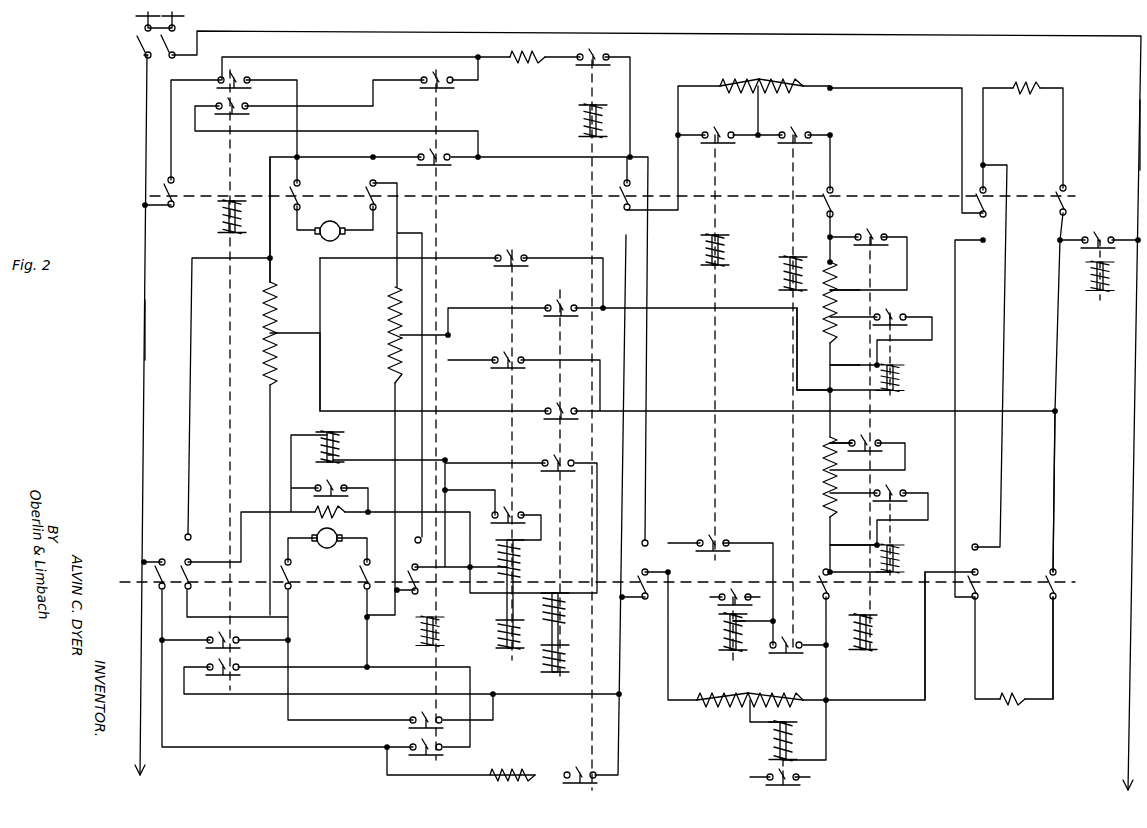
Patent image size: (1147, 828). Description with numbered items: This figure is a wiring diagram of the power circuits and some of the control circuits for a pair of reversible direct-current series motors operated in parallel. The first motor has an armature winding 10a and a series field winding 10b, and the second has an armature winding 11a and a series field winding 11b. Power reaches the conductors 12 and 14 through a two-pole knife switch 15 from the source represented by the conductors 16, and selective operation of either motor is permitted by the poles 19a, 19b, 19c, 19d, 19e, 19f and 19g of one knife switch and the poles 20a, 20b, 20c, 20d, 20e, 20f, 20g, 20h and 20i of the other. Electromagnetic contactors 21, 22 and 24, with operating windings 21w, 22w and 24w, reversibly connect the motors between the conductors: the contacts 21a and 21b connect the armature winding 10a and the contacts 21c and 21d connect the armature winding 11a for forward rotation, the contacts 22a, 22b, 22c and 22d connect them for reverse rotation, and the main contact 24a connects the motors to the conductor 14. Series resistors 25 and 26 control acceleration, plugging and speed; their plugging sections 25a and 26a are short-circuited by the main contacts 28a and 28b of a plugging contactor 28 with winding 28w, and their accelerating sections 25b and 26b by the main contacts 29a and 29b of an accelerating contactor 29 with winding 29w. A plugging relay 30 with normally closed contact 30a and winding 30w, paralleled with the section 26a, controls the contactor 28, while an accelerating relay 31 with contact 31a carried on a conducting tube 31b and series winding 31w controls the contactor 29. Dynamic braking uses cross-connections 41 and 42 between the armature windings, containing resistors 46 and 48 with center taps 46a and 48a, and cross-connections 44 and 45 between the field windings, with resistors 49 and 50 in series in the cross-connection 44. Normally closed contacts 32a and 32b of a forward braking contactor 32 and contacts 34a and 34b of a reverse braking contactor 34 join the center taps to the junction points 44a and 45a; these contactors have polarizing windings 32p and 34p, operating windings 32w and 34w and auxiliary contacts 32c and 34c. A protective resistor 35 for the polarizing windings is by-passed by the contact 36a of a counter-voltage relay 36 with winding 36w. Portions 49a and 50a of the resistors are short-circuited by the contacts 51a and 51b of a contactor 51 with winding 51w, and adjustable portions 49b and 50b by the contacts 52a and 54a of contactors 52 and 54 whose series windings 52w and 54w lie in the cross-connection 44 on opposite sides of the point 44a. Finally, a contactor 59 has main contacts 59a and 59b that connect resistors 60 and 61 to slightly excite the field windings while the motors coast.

The armature winding 10a is at (340, 238).
The series field winding 10b is at (1038, 76).
The armature winding 11a is at (327, 548).
The series field winding 11b is at (1010, 708).
The conductor 12 is at (144, 328).
The conductor 14 is at (1140, 134).
The two-pole knife switch 15 is at (138, 46).
The conductors 16 is at (140, 17).
The pole 19a is at (160, 188).
The pole 19b is at (311, 192).
The pole 19c is at (372, 188).
The double-throw pole 19d is at (625, 190).
The pole 19e is at (822, 192).
The double-throw pole 19f is at (978, 190).
The pole 19g is at (1068, 196).
The pole 20a is at (160, 575).
The pole 20b is at (292, 592).
The pole 20c is at (365, 582).
The double-throw pole 20d is at (648, 593).
The pole 20e is at (823, 572).
The double-throw pole 20f is at (988, 571).
The pole 20g is at (1067, 583).
The double-throw pole 20h is at (195, 572).
The double-throw pole 20i is at (412, 570).
The electromagnetic contactor 21 is at (232, 165).
The main contact 21a is at (232, 86).
The main contact 21b is at (236, 112).
The main contact 21c is at (215, 632).
The main contact 21d is at (235, 668).
The operating winding 21w is at (230, 212).
The electromagnetic contactor 22 is at (438, 113).
The main contact 22a is at (434, 73).
The main contact 22b is at (431, 165).
The main contact 22c is at (414, 715).
The main contact 22d is at (414, 745).
The operating winding 22w is at (425, 626).
The electromagnetic contactor 24 is at (1097, 275).
The main contact 24a is at (1098, 231).
The operating winding 24w is at (1090, 275).
The series resistor 25 is at (761, 64).
The plugging section 25a is at (784, 82).
The accelerating section 25b is at (733, 82).
The series resistor 26 is at (740, 709).
The plugging section 26a is at (781, 692).
The accelerating section 26b is at (726, 692).
The electromagnetic plugging contactor 28 is at (793, 224).
The main contact 28a is at (795, 125).
The main contact 28b is at (785, 640).
The operating winding 28w is at (788, 264).
The electromagnetic accelerating contactor 29 is at (715, 340).
The main contact 29a is at (716, 125).
The main contact 29b is at (713, 537).
The operating winding 29w is at (710, 240).
The plugging relay 30 is at (796, 740).
The normally closed contact 30a is at (780, 786).
The operating winding 30w is at (795, 738).
The accelerating relay 31 is at (733, 601).
The normally closed contact 31a is at (735, 592).
The conducting tube 31b is at (727, 620).
The series-type operating winding 31w is at (725, 636).
The electromagnetic forward braking contactor 32 is at (510, 435).
The main contact 32a is at (502, 268).
The main contact 32b is at (496, 368).
The auxiliary contact 32c is at (508, 512).
The polarizing winding 32p is at (514, 552).
The operating winding 32w is at (498, 626).
The electromagnetic reverse braking contactor 34 is at (560, 381).
The main contact 34a is at (553, 315).
The main contact 34b is at (553, 419).
The auxiliary contact 34c is at (552, 455).
The polarizing winding 34p is at (551, 607).
The operating winding 34w is at (548, 652).
The protective resistor 35 is at (315, 518).
The counter-voltage relay 36 is at (340, 422).
The normally closed contact 36a is at (340, 480).
The operating winding 36w is at (334, 448).
The cross-connection 41 is at (270, 238).
The cross-connection 42 is at (395, 266).
The cross-connection 44 is at (826, 676).
The junction point 44a is at (830, 390).
The cross-connection 45 is at (1053, 672).
The junction point 45a is at (1073, 491).
The resistor 46 is at (281, 302).
The center tap 46a is at (270, 338).
The resistor 48 is at (393, 294).
The center tap 48a is at (393, 333).
The resistor 49 is at (820, 307).
The resistor portion 49a is at (832, 290).
The adjustable resistor portion 49b is at (832, 342).
The resistor 50 is at (828, 484).
The resistor portion 50a is at (826, 452).
The adjustable resistor portion 50b is at (832, 508).
The electromagnetic contactor 51 is at (870, 282).
The normally closed contact 51a is at (875, 229).
The normally closed contact 51b is at (876, 440).
The operating winding 51w is at (868, 636).
The electromagnetic contactor 52 is at (893, 350).
The normally closed contact 52a is at (894, 315).
The series-type operating winding 52w is at (898, 378).
The electromagnetic contactor 54 is at (893, 533).
The normally closed contact 54a is at (895, 492).
The series-type operating winding 54w is at (898, 553).
The contactor 59 is at (592, 223).
The main contact 59a is at (583, 93).
The main contact 59b is at (577, 784).
The resistor 60 is at (527, 70).
The resistor 61 is at (512, 765).